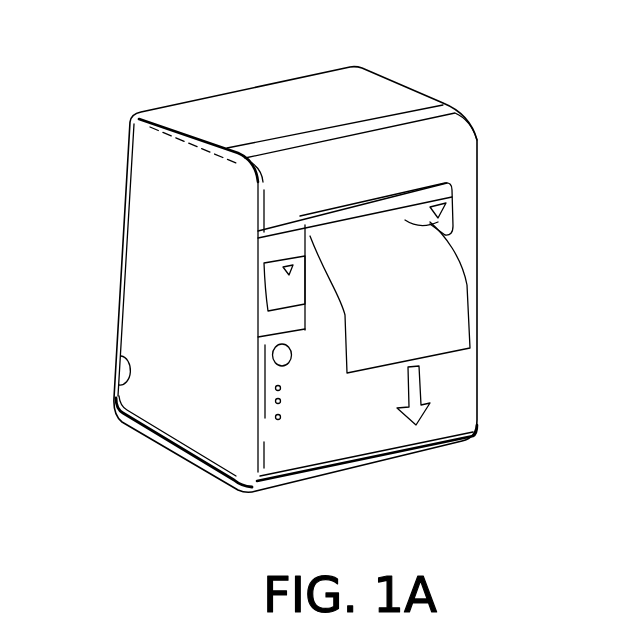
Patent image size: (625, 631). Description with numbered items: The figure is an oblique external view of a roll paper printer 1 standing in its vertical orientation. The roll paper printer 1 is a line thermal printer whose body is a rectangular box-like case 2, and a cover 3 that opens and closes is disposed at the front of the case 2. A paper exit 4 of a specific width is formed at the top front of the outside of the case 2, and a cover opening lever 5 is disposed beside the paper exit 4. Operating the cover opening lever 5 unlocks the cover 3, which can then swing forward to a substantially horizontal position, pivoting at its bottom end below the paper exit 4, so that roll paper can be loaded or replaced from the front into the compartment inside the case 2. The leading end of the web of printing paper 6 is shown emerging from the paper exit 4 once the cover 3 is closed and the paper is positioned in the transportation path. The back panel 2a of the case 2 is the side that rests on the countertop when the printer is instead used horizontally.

The roll paper printer 1 is at (497, 107).
The case 2 is at (458, 163).
The back panel 2a is at (124, 205).
The cover 3 is at (318, 372).
The paper exit 4 is at (442, 222).
The cover opening lever 5 is at (290, 298).
The printing paper 6 is at (455, 270).